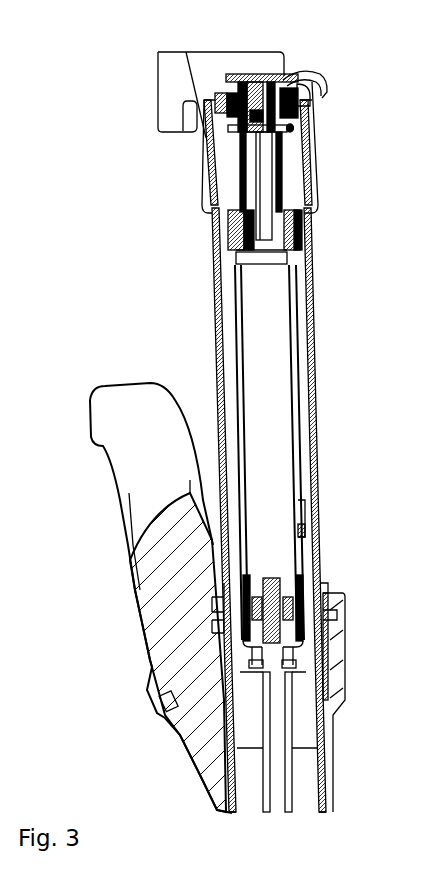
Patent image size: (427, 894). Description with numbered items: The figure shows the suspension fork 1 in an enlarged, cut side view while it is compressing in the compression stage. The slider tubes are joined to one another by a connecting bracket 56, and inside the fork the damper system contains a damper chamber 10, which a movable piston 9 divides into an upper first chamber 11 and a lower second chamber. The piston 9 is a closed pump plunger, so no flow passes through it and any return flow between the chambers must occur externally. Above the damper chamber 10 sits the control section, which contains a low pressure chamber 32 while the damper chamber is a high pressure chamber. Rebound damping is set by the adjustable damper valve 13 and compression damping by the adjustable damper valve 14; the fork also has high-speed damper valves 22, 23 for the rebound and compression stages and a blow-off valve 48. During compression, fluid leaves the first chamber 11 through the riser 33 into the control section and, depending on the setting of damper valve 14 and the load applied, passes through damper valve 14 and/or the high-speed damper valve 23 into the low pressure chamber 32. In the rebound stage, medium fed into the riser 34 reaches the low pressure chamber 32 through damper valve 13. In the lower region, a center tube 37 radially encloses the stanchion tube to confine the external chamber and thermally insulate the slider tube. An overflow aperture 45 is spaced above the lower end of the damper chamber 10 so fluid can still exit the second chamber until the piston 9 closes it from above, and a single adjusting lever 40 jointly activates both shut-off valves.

The suspension fork 1 is at (92, 84).
The movable piston 9 is at (284, 592).
The damper chamber 10 is at (272, 415).
The first chamber 11 is at (268, 345).
The damper valve 13 is at (300, 90).
The damper valve 14 is at (212, 86).
The high-speed damper valve 22 is at (293, 128).
The high-speed damper valve 23 is at (218, 142).
The low pressure chamber 32 is at (287, 157).
The riser 33 is at (248, 192).
The riser 34 is at (270, 180).
The center tube 37 is at (302, 645).
The adjusting lever 40 is at (310, 70).
The overflow aperture 45 is at (305, 500).
The blow-off valve 48 is at (278, 258).
The connecting bracket 56 is at (98, 385).